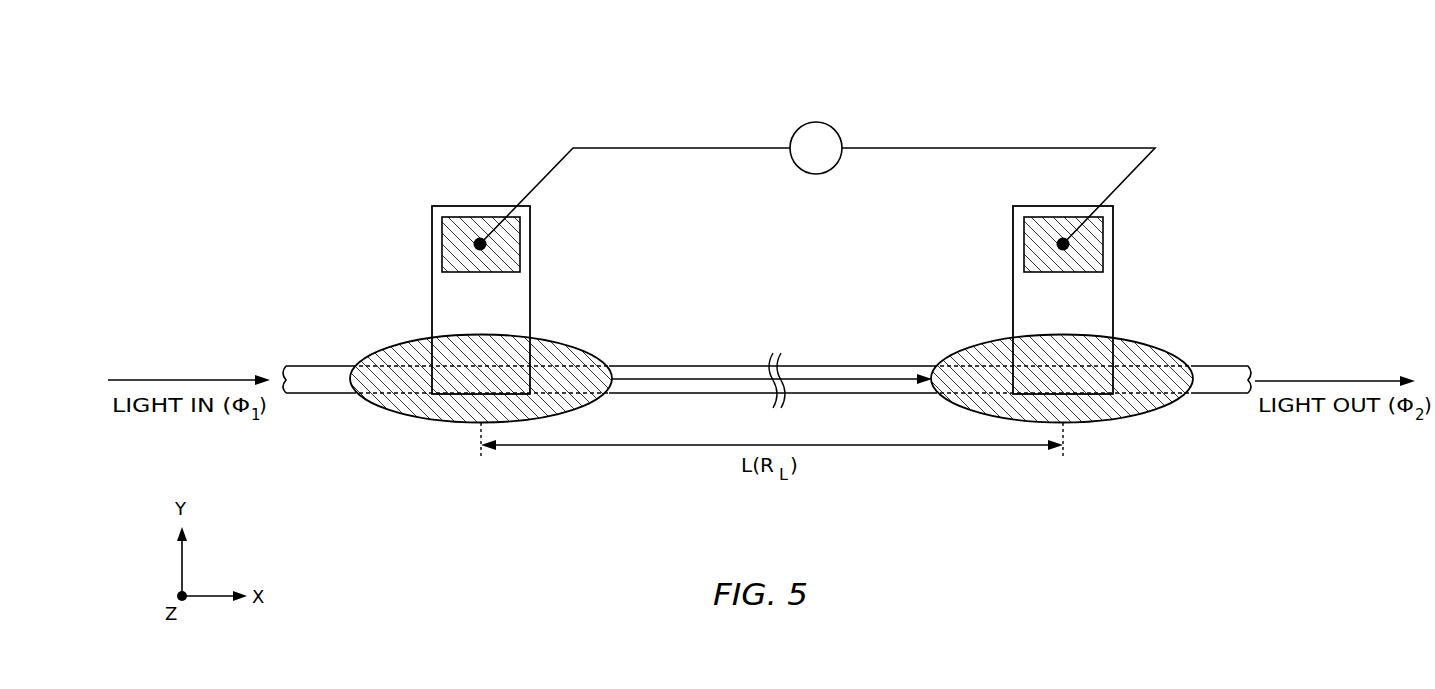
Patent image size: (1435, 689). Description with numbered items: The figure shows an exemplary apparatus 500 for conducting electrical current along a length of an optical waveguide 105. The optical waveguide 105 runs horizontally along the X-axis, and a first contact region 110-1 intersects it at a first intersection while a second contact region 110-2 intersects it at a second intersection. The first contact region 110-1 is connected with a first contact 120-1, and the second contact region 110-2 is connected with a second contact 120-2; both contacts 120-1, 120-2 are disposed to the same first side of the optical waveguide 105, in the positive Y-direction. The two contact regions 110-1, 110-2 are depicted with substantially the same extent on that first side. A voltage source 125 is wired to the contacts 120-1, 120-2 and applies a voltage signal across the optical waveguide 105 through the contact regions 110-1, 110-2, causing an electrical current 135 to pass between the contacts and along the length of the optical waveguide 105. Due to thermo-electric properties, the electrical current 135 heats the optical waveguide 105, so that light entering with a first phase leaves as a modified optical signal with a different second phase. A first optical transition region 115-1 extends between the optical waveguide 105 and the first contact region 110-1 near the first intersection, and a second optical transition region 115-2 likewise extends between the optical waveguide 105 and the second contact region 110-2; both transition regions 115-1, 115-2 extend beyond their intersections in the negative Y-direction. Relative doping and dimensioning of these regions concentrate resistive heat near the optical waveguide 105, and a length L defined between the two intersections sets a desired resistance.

The optical waveguide 105 is at (322, 366).
The first contact region 110-1 is at (530, 290).
The second contact region 110-2 is at (1113, 290).
The first optical transition region 115-1 is at (405, 343).
The second optical transition region 115-2 is at (981, 343).
The first contact 120-1 is at (520, 243).
The second contact 120-2 is at (1103, 243).
The voltage source 125 is at (817, 123).
The electrical current 135 is at (665, 363).
The apparatus 500 is at (1163, 70).